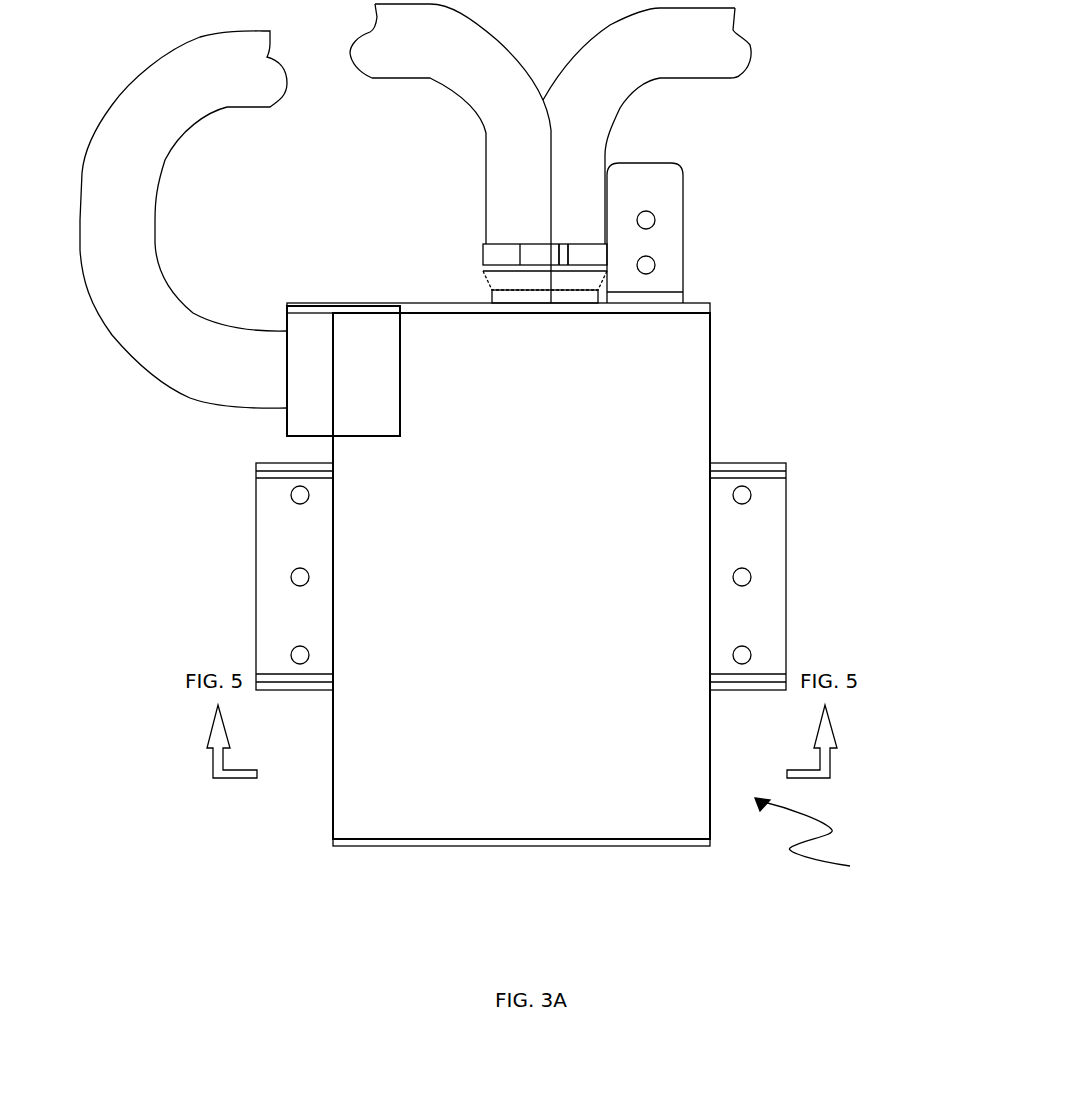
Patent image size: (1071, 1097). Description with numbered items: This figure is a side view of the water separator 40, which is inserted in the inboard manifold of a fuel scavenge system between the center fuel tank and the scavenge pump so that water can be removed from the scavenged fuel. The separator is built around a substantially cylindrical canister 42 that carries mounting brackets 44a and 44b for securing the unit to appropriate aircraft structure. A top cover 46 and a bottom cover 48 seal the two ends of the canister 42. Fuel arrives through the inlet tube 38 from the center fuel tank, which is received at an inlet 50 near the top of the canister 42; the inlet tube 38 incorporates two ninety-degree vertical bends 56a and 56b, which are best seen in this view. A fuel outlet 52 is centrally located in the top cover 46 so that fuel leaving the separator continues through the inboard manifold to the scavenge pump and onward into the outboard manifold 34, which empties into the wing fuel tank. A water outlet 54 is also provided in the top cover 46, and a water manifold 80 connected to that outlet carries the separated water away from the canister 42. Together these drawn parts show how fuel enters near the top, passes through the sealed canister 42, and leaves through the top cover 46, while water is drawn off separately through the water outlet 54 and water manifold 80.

The outboard manifold 34 is at (488, 105).
The inlet tube 38 is at (133, 225).
The water separator 40 is at (819, 838).
The canister 42 is at (705, 396).
The mounting bracket 44a is at (780, 522).
The mounting bracket 44b is at (683, 203).
The top cover 46 is at (435, 305).
The bottom cover 48 is at (547, 847).
The inlet 50 is at (287, 369).
The fuel outlet 52 is at (508, 244).
The water outlet 54 is at (573, 243).
The vertical bend 56a is at (112, 335).
The vertical bend 56b is at (112, 105).
The water manifold 80 is at (645, 60).